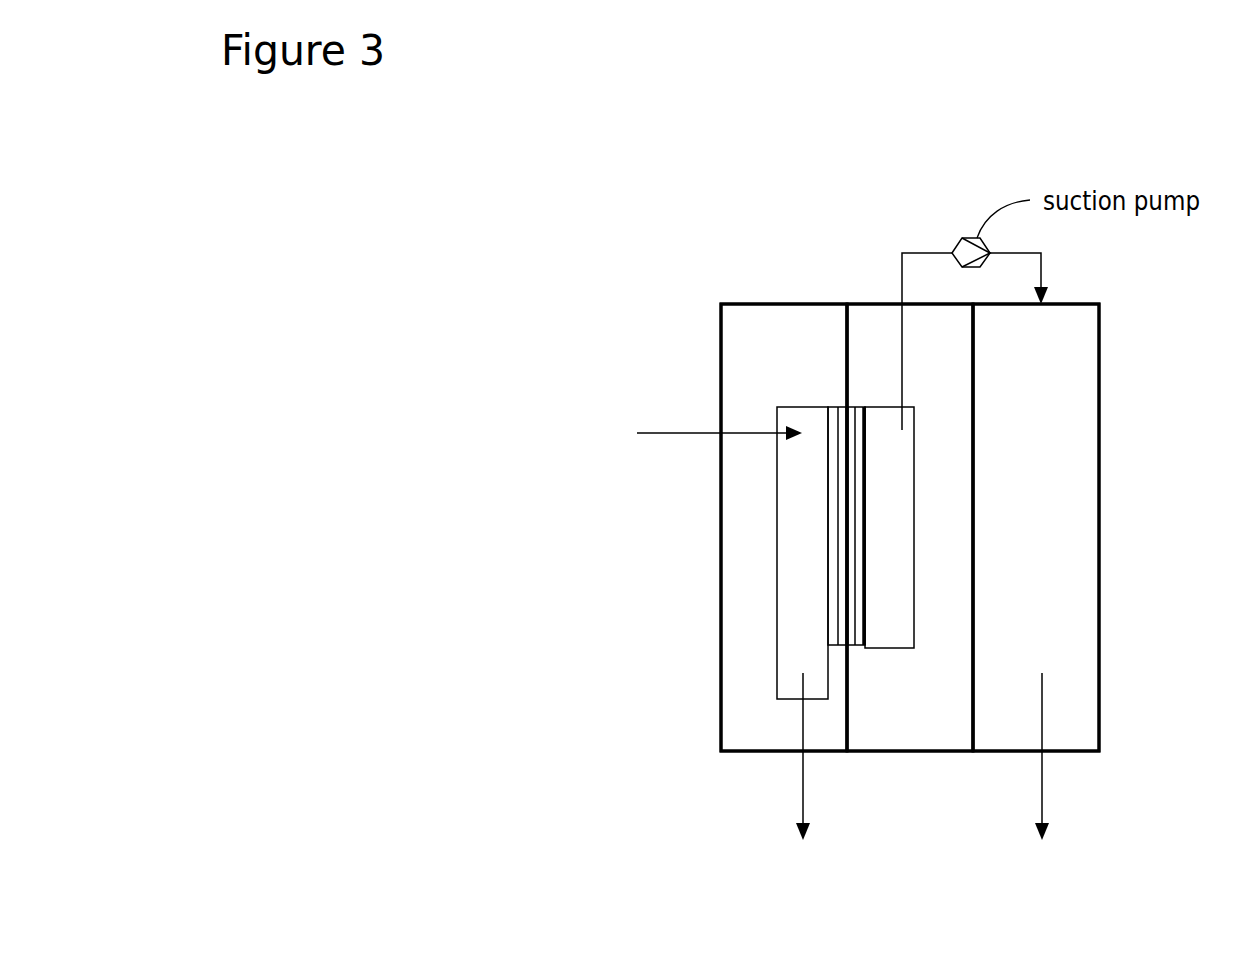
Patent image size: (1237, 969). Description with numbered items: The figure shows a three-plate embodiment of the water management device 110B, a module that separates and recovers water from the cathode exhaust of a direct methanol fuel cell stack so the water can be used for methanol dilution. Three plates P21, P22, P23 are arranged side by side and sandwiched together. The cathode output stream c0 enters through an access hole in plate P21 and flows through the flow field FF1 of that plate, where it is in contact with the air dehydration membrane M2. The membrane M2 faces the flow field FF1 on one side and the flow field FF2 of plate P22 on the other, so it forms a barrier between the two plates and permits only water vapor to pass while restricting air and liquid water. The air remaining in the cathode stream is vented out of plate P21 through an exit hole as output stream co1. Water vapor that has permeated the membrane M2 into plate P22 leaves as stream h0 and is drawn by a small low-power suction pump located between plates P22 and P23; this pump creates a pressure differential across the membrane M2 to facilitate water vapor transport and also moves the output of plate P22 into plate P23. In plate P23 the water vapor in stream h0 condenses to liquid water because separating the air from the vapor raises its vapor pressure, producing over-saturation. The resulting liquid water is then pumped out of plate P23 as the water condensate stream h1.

The water management device 110B is at (545, 810).
The plate P21 is at (804, 369).
The plate P22 is at (957, 369).
The plate P23 is at (1070, 369).
The flow field FF1 is at (816, 540).
The flow field FF2 is at (904, 550).
The membrane M2 is at (863, 407).
The cathode output stream c0 is at (688, 432).
The water vapor stream h0 is at (940, 253).
The output stream co1 is at (803, 783).
The water condensate stream h1 is at (1042, 783).